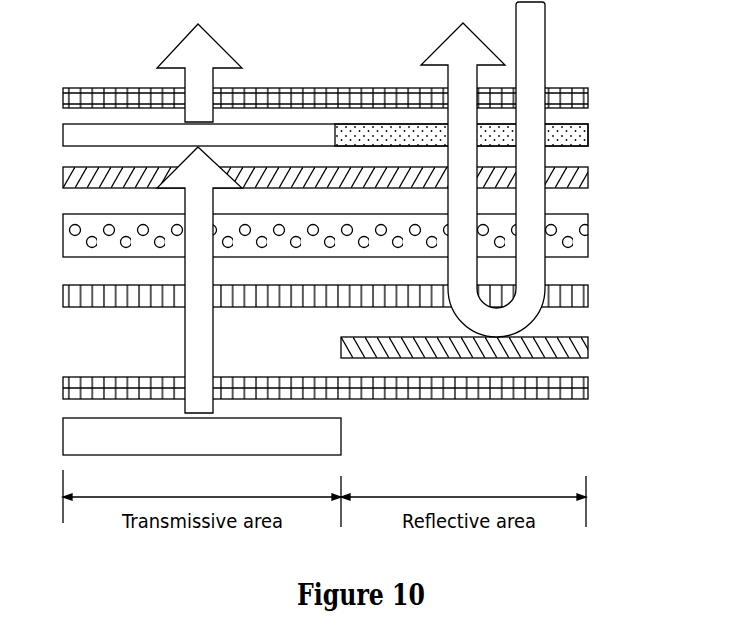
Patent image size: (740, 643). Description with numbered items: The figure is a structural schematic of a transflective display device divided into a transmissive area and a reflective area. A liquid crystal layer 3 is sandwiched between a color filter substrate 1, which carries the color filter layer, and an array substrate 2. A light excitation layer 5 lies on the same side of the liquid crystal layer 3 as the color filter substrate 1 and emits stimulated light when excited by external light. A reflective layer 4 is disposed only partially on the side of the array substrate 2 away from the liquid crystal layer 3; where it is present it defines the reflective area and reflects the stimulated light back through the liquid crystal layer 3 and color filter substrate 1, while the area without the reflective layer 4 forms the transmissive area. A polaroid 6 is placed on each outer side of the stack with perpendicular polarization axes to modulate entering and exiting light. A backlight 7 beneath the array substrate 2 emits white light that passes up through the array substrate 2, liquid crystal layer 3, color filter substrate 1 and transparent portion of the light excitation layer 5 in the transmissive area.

The color filter substrate 1 is at (588, 174).
The array substrate 2 is at (588, 296).
The liquid crystal layer 3 is at (588, 217).
The reflective layer 4 is at (588, 348).
The light excitation layer 5 is at (588, 134).
The polaroid 6 is at (588, 91).
The backlight 7 is at (327, 447).